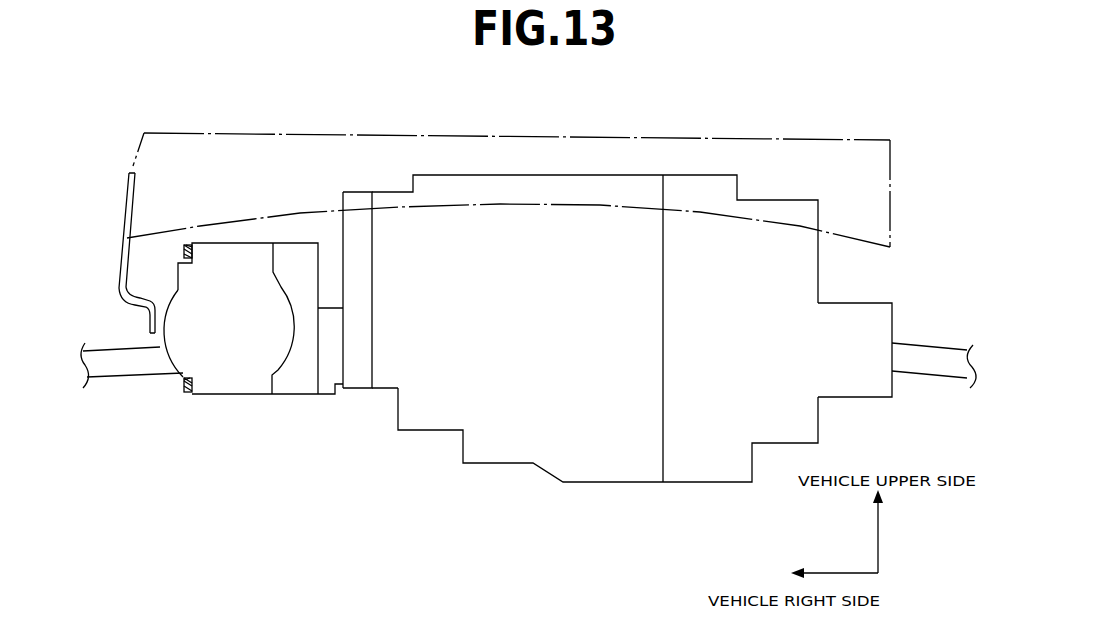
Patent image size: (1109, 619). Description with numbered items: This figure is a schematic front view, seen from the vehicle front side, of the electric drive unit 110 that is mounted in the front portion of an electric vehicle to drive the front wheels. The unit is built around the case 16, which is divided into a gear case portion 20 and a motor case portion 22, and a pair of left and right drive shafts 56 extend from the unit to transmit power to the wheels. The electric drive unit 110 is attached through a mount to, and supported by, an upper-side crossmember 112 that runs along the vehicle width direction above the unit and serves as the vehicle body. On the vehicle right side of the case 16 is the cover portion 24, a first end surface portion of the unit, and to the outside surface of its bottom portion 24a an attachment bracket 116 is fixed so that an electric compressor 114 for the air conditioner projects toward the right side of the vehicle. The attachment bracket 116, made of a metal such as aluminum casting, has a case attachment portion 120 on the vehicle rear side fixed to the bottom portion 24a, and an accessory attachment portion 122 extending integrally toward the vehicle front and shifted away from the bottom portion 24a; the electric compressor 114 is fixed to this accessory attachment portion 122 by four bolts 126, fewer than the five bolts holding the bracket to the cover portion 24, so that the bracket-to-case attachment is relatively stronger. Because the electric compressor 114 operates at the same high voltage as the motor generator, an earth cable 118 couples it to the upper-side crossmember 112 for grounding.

The case 16 is at (617, 353).
The gear case portion 20 is at (702, 458).
The motor case portion 22 is at (517, 437).
The cover portion 24 is at (337, 299).
The bottom portion 24a is at (343, 227).
The drive shafts 56 is at (115, 365).
The electric drive unit 110 is at (508, 173).
The upper-side crossmember 112 is at (537, 148).
The electric compressor 114 is at (223, 263).
The attachment bracket 116 is at (235, 319).
The earth cable 118 is at (132, 210).
The case attachment portion 120 is at (325, 380).
The accessory attachment portion 122 is at (292, 265).
The bolts 126 is at (185, 248).